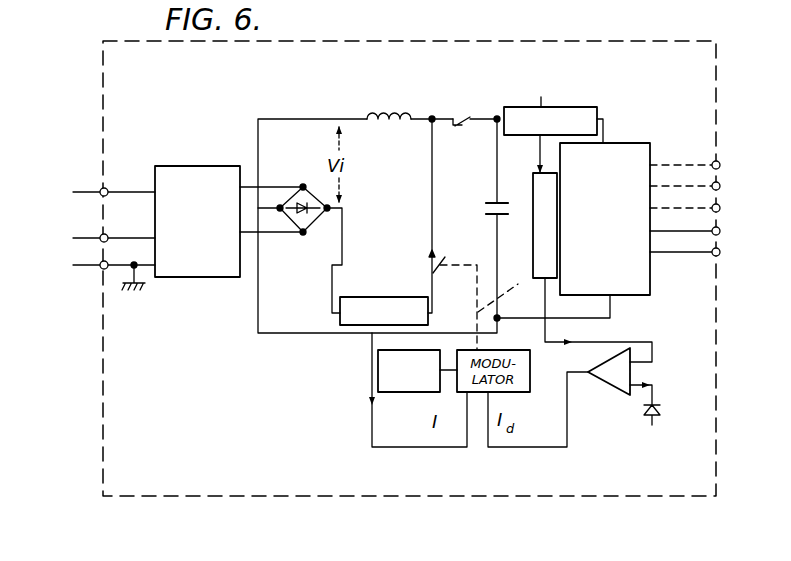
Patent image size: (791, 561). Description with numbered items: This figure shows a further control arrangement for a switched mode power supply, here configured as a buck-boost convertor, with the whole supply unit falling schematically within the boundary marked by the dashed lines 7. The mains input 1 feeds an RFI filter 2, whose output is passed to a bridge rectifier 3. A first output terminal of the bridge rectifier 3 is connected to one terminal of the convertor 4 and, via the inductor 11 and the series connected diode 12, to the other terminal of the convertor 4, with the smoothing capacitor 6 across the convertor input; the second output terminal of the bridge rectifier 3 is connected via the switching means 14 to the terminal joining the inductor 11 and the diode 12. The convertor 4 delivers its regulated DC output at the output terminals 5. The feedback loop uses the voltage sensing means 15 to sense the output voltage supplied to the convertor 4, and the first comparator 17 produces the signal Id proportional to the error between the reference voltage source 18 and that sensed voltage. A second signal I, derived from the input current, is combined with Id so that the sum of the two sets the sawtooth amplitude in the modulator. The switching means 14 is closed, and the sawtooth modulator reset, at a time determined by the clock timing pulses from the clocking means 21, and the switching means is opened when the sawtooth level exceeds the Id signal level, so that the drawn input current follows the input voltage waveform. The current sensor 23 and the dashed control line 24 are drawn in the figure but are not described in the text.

The mains input 1 is at (77, 179).
The RFI filter 2 is at (178, 168).
The bridge rectifier 3 is at (288, 197).
The DC-DC convertor 4 is at (625, 143).
The regulated DC output terminals 5 is at (688, 264).
The smoothing capacitor 6 is at (484, 205).
The dashed lines 7 is at (617, 484).
The inductor 11 is at (383, 114).
The rectifier diode 12 is at (460, 117).
The switching means 14 is at (533, 196).
The voltage sensing means 15 is at (543, 125).
The first comparator 17 is at (614, 379).
The reference voltage source 18 is at (654, 423).
The clocking means 21 is at (378, 371).
The current sensor 23 is at (384, 299).
The control line 24 is at (505, 287).